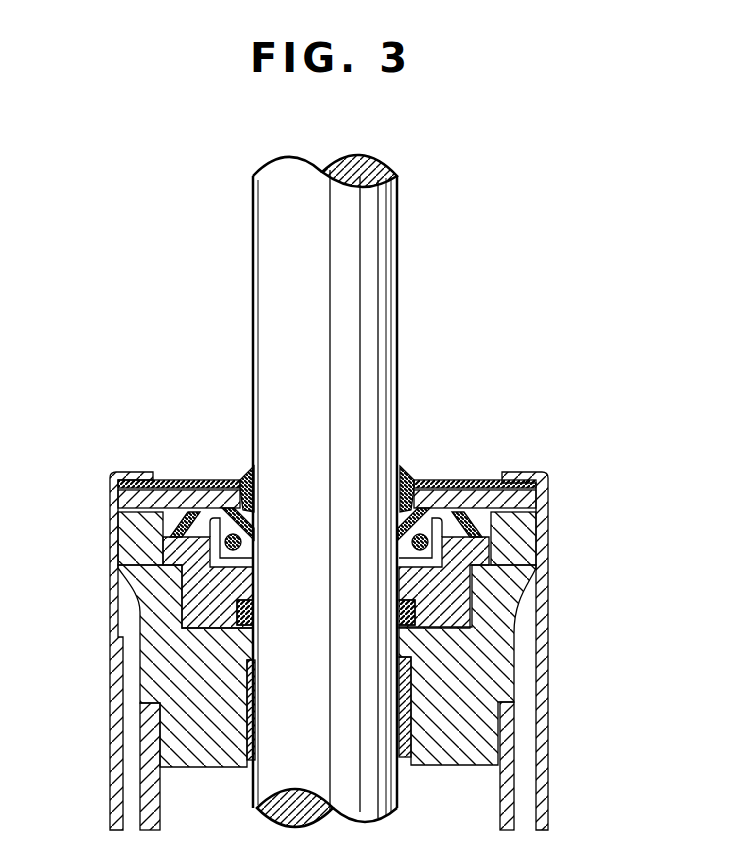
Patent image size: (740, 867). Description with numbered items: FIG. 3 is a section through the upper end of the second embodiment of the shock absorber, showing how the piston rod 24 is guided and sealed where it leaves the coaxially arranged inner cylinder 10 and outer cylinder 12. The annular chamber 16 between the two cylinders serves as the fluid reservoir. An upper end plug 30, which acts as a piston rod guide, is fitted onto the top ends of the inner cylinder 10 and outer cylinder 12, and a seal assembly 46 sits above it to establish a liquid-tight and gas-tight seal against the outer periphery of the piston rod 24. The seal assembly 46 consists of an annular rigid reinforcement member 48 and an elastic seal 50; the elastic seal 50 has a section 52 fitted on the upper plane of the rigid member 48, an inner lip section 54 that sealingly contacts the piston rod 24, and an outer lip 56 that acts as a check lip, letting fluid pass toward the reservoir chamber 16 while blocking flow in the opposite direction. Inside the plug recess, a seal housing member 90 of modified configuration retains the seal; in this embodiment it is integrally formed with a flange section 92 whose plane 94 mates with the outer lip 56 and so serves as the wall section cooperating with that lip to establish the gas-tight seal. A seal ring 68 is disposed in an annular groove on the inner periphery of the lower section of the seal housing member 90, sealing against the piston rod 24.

The inner cylinder 10 is at (508, 748).
The outer cylinder 12 is at (548, 606).
The annular chamber 16 is at (523, 720).
The piston rod 24 is at (383, 380).
The upper end plug 30 is at (157, 676).
The seal assembly 46 is at (207, 472).
The annular rigid reinforcement member 48 is at (133, 498).
The elastic seal 50 is at (165, 472).
The section 52 is at (458, 477).
The inner lip section 54 is at (243, 468).
The outer lip 56 is at (515, 480).
The seal ring 68 is at (420, 605).
The seal housing member 90 is at (185, 597).
The flange section 92 is at (172, 553).
The plane 94 is at (163, 537).